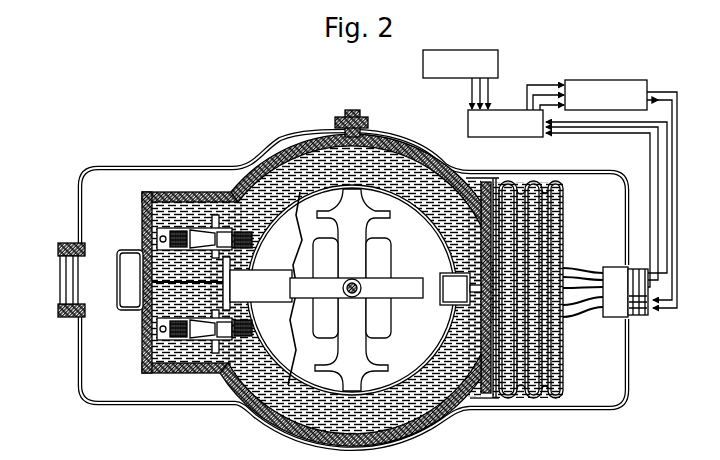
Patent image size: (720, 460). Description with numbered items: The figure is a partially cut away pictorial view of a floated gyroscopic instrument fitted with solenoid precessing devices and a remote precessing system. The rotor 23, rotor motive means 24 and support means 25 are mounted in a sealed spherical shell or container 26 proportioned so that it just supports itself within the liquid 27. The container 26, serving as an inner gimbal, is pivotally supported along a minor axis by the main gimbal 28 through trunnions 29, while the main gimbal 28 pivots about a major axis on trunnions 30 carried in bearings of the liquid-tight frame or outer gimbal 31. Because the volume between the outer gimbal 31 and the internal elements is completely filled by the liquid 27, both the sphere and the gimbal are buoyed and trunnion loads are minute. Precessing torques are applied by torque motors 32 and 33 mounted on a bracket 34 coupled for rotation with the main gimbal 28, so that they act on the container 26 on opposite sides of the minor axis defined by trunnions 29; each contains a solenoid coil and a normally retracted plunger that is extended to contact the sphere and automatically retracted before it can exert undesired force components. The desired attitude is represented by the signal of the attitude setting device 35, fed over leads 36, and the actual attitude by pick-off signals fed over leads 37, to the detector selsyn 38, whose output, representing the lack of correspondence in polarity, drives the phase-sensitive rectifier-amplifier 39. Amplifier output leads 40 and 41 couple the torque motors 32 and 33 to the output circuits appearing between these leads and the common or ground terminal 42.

The rotor 23 is at (401, 288).
The rotor motive means 24 is at (388, 255).
The support means 25 is at (354, 377).
The spherical shell or container 26 is at (443, 356).
The liquid 27 is at (357, 290).
The main gimbal 28 is at (452, 274).
The trunnions 29 is at (352, 299).
The trunnions 30 is at (153, 283).
The frame or outer gimbal 31 is at (139, 210).
The torque motor 32 is at (183, 210).
The torque motor 33 is at (188, 356).
The bracket 34 is at (225, 308).
The attitude setting device 35 is at (460, 50).
The leads 36 is at (471, 95).
The leads 37 is at (606, 128).
The detector selsyn 38 is at (503, 138).
The phase-sensitive rectifier-amplifier 39 is at (603, 80).
The amplifier output lead 40 is at (670, 104).
The amplifier output lead 41 is at (677, 160).
The common or ground terminal 42 is at (655, 95).